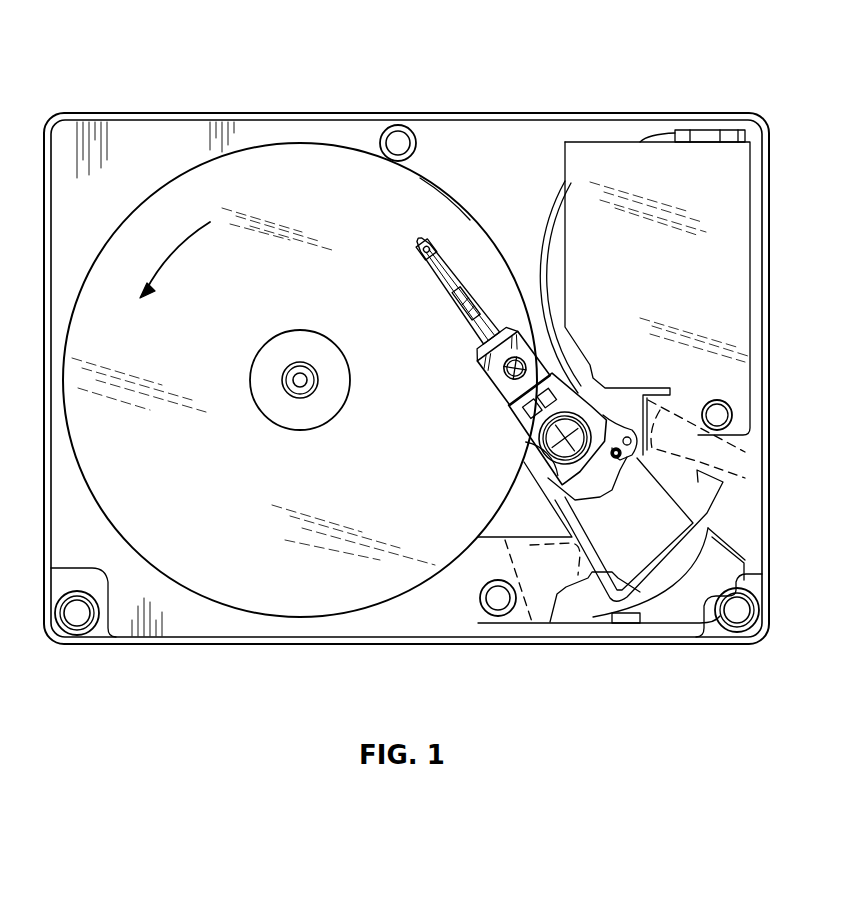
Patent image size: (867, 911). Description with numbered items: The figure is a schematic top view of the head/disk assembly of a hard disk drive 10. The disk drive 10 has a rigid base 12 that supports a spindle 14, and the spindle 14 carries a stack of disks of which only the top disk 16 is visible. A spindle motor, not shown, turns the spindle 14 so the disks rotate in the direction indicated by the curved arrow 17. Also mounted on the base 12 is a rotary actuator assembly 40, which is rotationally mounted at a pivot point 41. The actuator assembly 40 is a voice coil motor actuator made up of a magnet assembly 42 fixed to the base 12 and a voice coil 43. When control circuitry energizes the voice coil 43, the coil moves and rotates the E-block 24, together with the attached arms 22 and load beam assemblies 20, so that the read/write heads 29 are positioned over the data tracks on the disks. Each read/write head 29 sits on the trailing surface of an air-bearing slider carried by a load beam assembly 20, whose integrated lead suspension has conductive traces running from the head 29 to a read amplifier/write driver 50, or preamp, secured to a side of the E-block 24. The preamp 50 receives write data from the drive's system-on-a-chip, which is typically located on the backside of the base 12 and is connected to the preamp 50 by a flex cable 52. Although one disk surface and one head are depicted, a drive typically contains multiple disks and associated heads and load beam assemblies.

The disk drive 10 is at (113, 55).
The rigid base 12 is at (190, 646).
The spindle 14 is at (306, 330).
The top disk 16 is at (440, 185).
The curved arrow 17 is at (176, 256).
The load beam assembly 20 is at (468, 314).
The arm 22 is at (493, 376).
The E-block 24 is at (522, 420).
The read/write head 29 is at (416, 238).
The rotary actuator assembly 40 is at (520, 500).
The pivot point 41 is at (540, 455).
The magnet assembly 42 is at (668, 420).
The voice coil 43 is at (712, 510).
The read amplifier/write driver 50 is at (606, 396).
The flex cable 52 is at (555, 214).